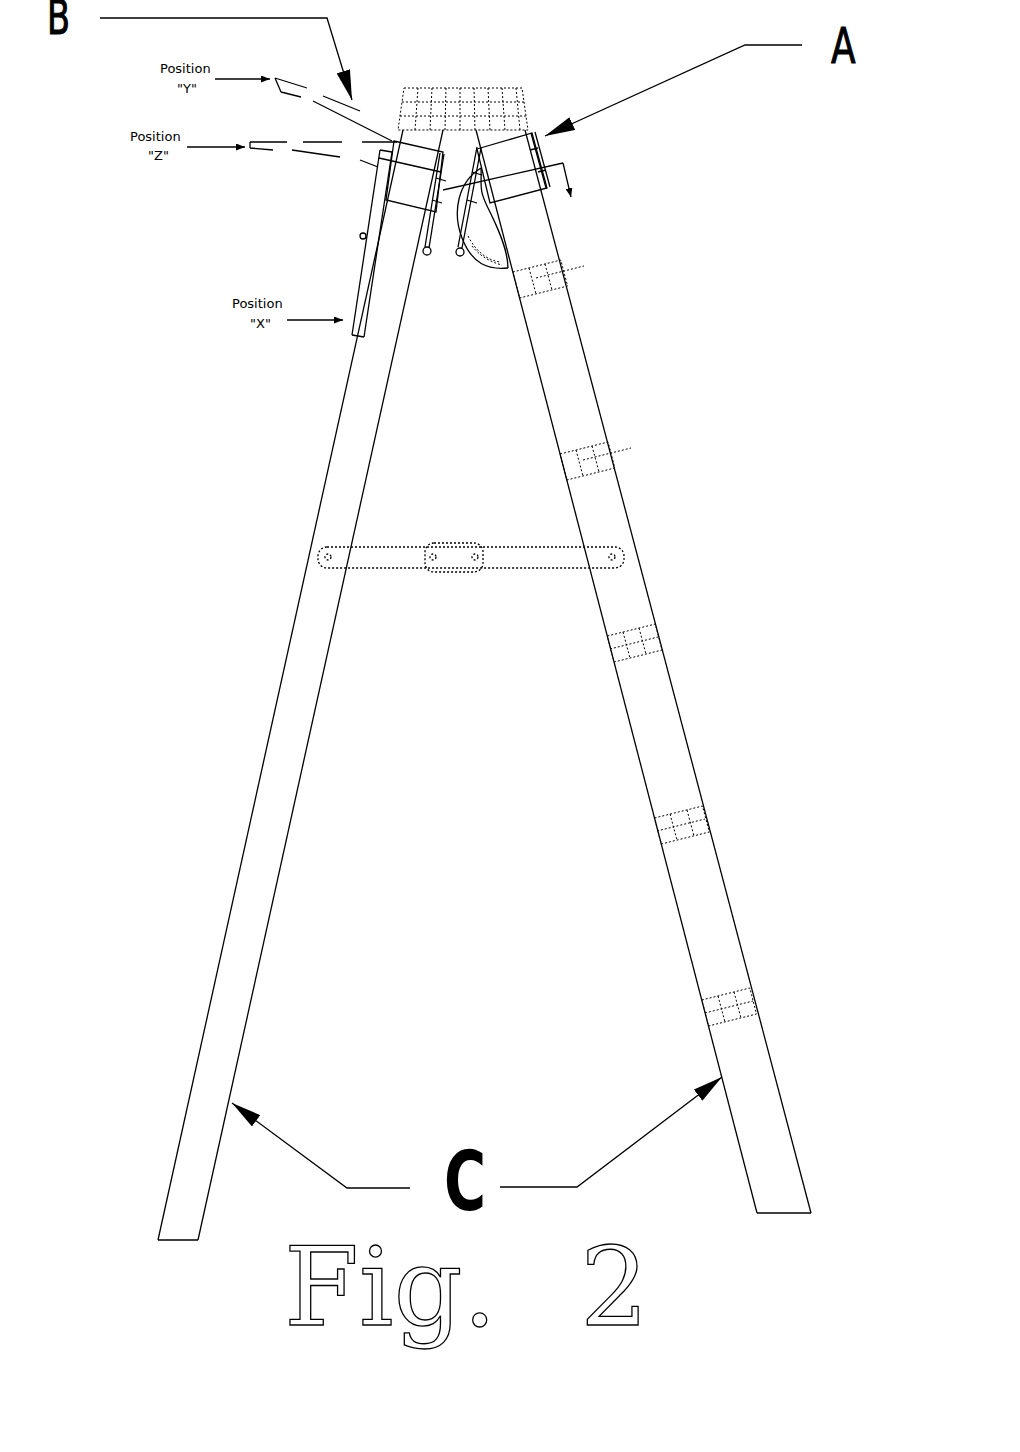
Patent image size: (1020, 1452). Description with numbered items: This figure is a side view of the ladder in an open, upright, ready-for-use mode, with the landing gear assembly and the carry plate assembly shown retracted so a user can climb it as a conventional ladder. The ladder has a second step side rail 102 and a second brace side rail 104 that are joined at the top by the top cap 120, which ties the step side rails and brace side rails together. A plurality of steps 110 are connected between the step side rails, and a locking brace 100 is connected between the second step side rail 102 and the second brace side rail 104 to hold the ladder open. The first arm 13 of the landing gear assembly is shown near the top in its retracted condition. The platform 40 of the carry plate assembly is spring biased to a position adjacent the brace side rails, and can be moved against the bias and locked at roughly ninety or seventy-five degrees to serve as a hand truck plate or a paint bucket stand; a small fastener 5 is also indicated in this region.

The top cap 120 is at (453, 130).
The first arm 13 is at (483, 217).
The steps 110 is at (540, 290).
The fastener 5 is at (571, 194).
The second step side rail 102 is at (585, 393).
The locking braces 100 is at (482, 565).
The second brace side rail 104 is at (247, 887).
The platform 40 is at (360, 283).